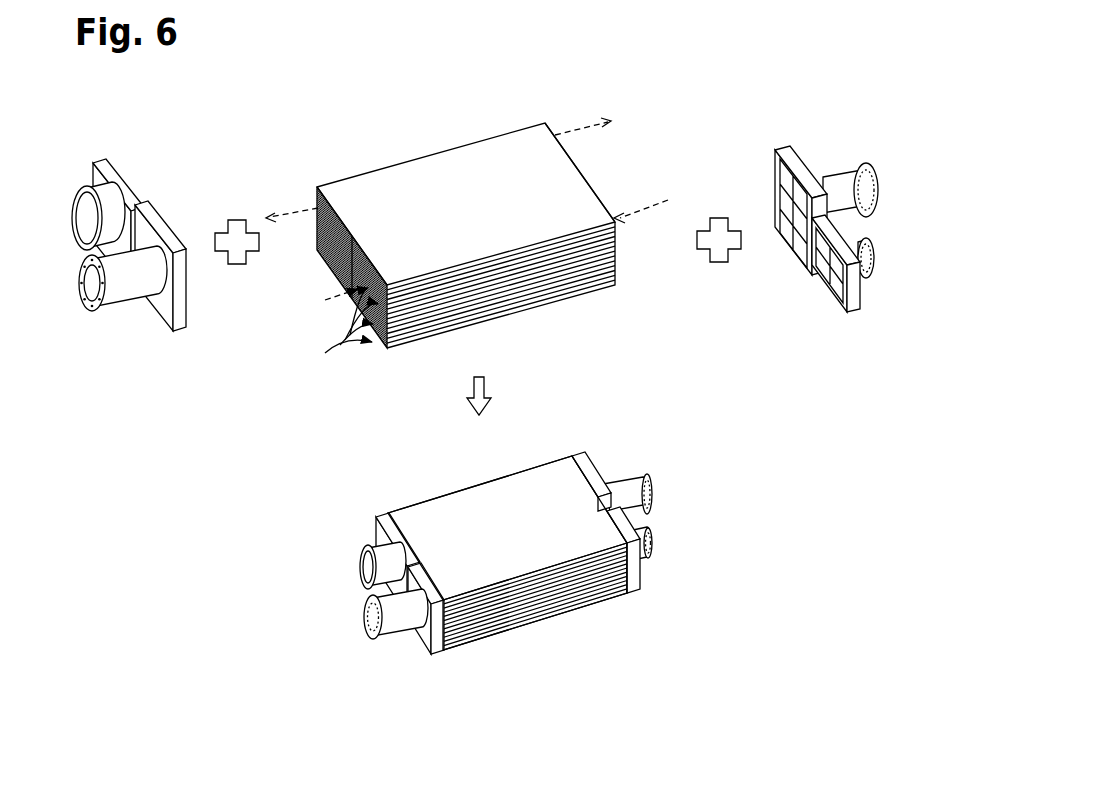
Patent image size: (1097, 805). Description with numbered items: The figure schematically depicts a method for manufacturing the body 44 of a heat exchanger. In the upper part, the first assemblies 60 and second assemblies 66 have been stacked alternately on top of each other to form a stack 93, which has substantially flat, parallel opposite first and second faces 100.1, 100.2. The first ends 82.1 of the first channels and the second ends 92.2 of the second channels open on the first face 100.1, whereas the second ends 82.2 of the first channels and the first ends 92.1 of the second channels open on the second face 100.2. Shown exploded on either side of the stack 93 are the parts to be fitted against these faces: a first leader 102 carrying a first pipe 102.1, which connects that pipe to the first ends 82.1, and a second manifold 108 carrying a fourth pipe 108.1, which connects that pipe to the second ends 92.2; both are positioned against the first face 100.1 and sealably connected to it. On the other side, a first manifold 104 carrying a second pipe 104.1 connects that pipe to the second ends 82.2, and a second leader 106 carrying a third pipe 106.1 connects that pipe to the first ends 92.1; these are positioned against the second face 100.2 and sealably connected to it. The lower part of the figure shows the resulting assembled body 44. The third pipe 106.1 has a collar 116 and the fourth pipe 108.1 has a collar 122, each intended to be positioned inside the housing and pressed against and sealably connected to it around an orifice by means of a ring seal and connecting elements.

The body 44 is at (663, 623).
The first assemblies 60 is at (325, 353).
The second assemblies 66 is at (621, 226).
The first ends of the first channels 82.1 is at (668, 200).
The second ends of the first channels 82.2 is at (303, 206).
The first ends of the second channels 92.1 is at (340, 296).
The second ends of the second channels 92.2 is at (568, 132).
The stack 93 is at (415, 157).
The first face 100.1 is at (560, 150).
The second face 100.2 is at (316, 218).
The first leader 102 is at (870, 298).
The first pipe 102.1 is at (868, 259).
The first manifold 104 is at (107, 152).
The second pipe 104.1 is at (82, 180).
The second leader 106 is at (137, 307).
The third pipe 106.1 is at (112, 290).
The second manifold 108 is at (832, 178).
The fourth pipe 108.1 is at (868, 193).
The collar 116 is at (363, 620).
The collar 122 is at (654, 497).